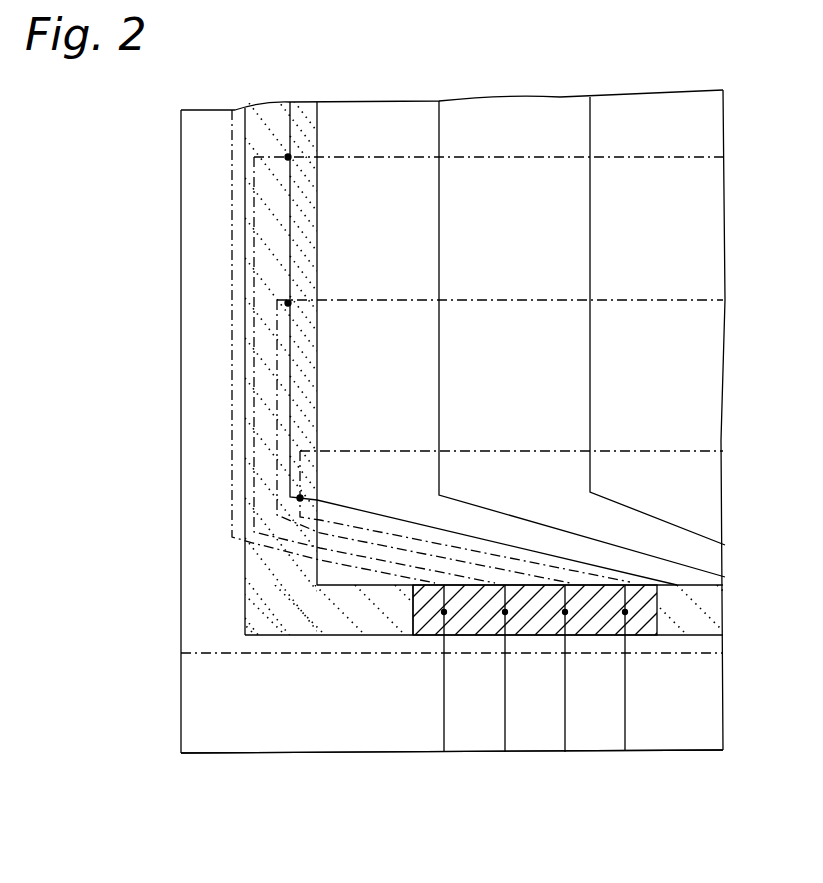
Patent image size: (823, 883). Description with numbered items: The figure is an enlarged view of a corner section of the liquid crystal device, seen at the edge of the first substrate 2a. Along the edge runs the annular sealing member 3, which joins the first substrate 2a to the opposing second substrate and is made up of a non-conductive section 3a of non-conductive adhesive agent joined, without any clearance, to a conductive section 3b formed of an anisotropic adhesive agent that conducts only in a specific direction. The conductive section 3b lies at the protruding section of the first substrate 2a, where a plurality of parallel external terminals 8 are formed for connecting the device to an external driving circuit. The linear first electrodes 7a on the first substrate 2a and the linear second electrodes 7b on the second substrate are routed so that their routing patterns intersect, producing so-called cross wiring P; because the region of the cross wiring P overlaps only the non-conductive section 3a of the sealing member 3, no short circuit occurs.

The first substrate 2a is at (201, 156).
The sealing member 3 is at (118, 550).
The non-conductive section 3a is at (267, 572).
The conductive section 3b is at (467, 621).
The first electrodes 7a is at (439, 140).
The second electrodes 7b is at (672, 451).
The external terminals 8 is at (426, 770).
The cross wiring P is at (288, 157).